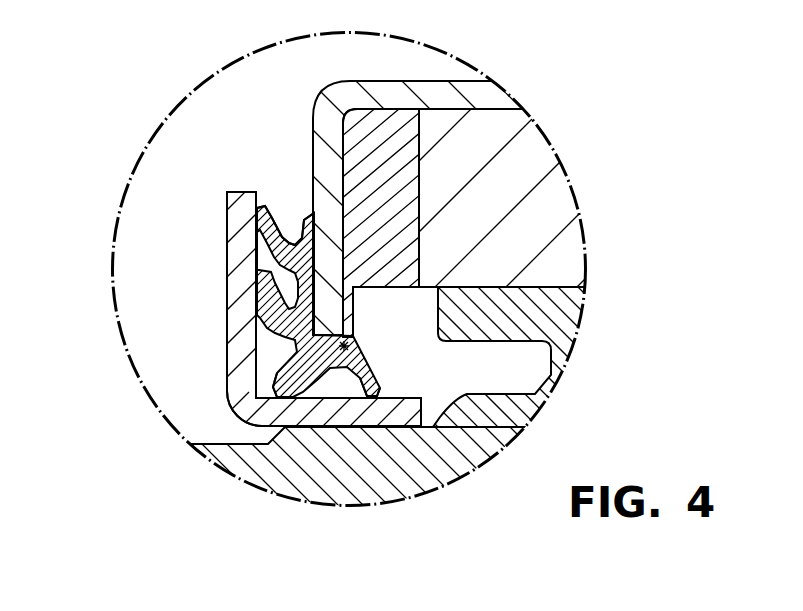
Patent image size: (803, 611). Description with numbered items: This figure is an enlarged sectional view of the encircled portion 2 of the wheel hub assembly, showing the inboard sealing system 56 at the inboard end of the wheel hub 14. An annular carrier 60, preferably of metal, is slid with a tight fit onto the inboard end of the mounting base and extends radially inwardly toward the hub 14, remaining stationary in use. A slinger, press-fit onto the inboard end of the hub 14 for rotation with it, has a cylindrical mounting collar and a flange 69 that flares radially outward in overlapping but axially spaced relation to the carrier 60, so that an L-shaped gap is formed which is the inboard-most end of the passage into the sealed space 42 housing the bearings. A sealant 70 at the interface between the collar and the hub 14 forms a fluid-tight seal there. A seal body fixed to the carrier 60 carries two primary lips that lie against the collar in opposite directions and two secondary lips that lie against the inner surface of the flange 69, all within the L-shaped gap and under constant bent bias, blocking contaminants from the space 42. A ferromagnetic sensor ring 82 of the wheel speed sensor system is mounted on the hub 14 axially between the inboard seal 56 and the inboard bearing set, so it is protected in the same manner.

The encircled portion 2 is at (103, 205).
The wheel hub 14 is at (336, 503).
The sealed space 42 is at (414, 380).
The inboard seal 56 is at (277, 128).
The annular carrier 60 is at (447, 95).
The flange 69 is at (240, 225).
The sealant 70 is at (309, 427).
The ferromagnetic sensor ring 82 is at (369, 130).